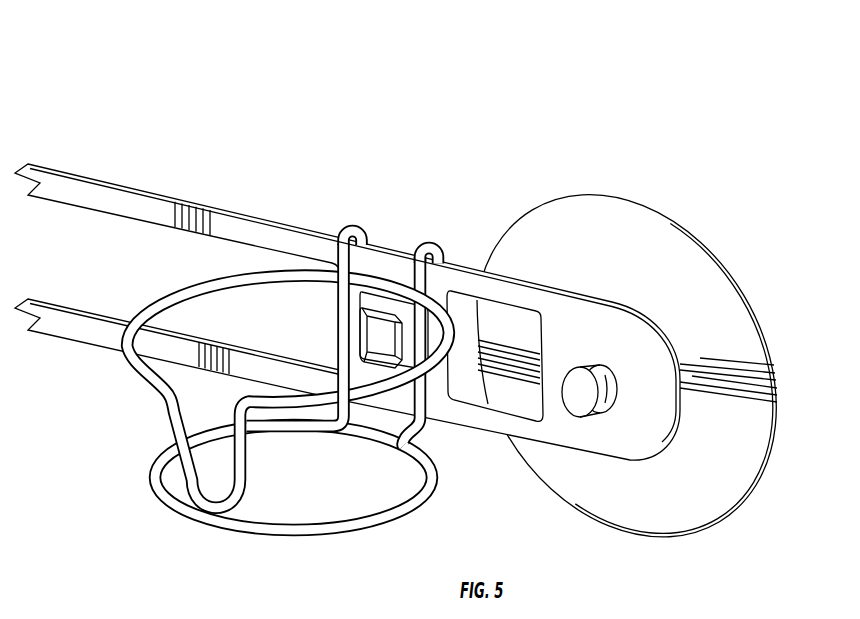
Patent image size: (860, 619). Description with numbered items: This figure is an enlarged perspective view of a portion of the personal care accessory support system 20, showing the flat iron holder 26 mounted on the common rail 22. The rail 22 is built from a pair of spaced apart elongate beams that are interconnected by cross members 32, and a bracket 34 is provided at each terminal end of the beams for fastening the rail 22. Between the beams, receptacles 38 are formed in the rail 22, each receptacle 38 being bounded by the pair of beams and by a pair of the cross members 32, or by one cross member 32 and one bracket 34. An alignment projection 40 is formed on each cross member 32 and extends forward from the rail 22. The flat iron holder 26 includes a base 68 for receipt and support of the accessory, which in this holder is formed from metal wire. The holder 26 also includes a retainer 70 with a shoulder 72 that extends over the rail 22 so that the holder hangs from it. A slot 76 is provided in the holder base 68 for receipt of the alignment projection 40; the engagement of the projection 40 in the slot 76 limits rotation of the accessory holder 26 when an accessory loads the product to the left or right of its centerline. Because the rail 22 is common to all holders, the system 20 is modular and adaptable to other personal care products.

The personal care accessory support system 20 is at (426, 307).
The rail 22 is at (247, 216).
The flat iron holder 26 is at (273, 345).
The cross member 32 is at (347, 312).
The bracket 34 is at (627, 347).
The receptacle 38 is at (95, 314).
The alignment projection 40 is at (466, 338).
The base 68 is at (310, 538).
The retainer 70 is at (340, 236).
The shoulder 72 is at (358, 224).
The slot 76 is at (340, 343).